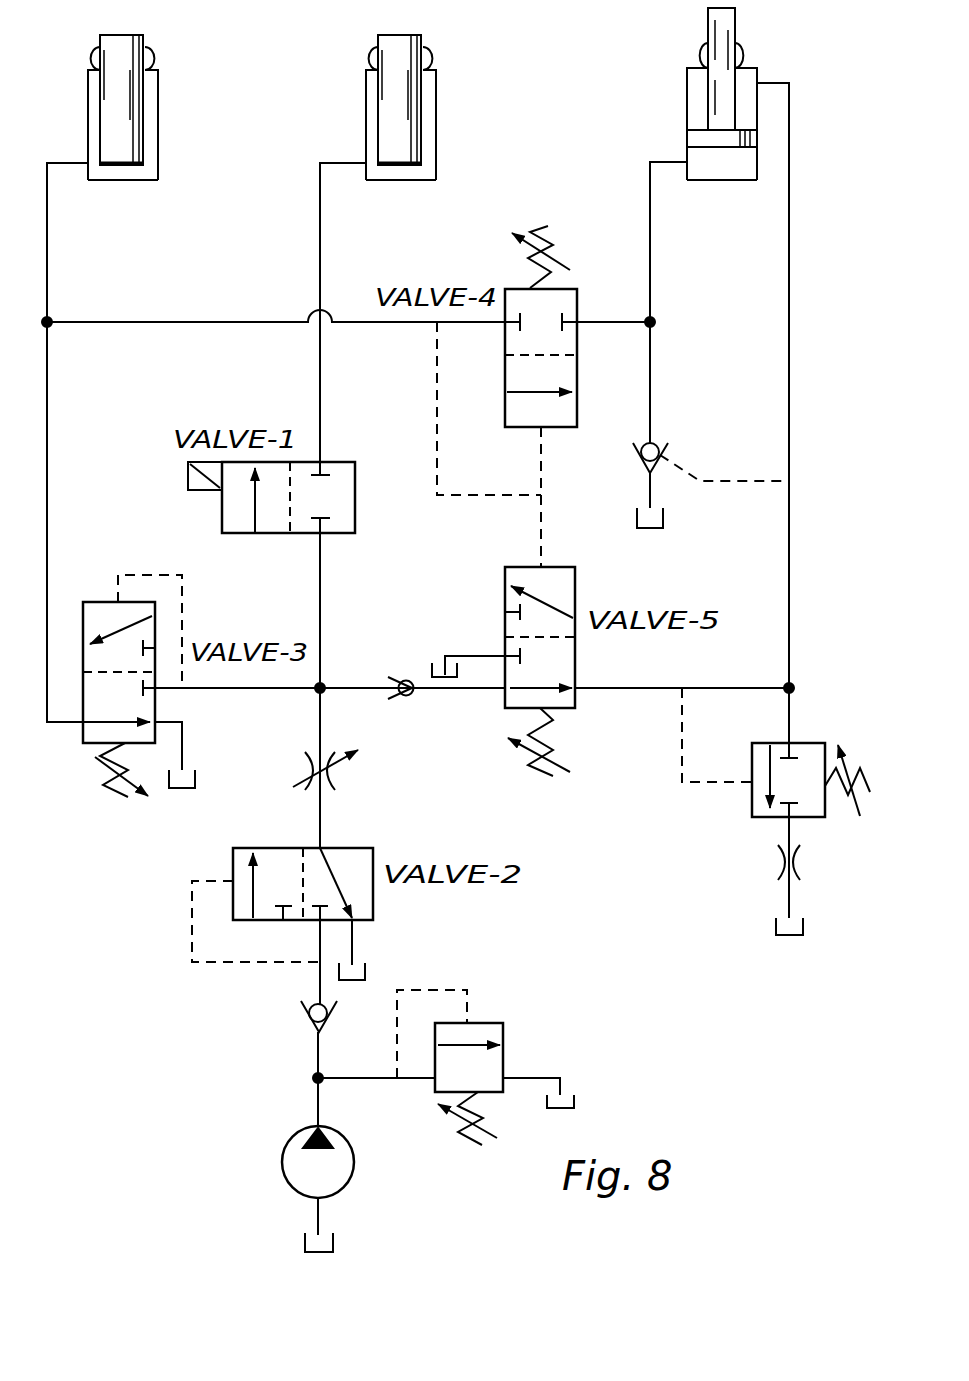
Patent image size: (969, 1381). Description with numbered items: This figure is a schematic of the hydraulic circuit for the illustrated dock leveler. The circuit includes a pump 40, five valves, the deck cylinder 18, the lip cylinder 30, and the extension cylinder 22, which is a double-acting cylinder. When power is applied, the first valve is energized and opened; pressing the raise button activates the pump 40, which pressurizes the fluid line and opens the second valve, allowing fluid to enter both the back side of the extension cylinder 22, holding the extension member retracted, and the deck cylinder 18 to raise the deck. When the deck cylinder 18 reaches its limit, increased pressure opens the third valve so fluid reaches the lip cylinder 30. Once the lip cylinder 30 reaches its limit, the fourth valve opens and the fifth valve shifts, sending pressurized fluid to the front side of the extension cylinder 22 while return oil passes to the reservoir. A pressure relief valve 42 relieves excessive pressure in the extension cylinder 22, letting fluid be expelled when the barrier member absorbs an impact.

The lip cylinder 30 is at (178, 130).
The deck cylinder 18 is at (452, 140).
The extension cylinder 22 is at (770, 67).
The pump 40 is at (293, 1148).
The pressure relief valve 42 is at (757, 795).